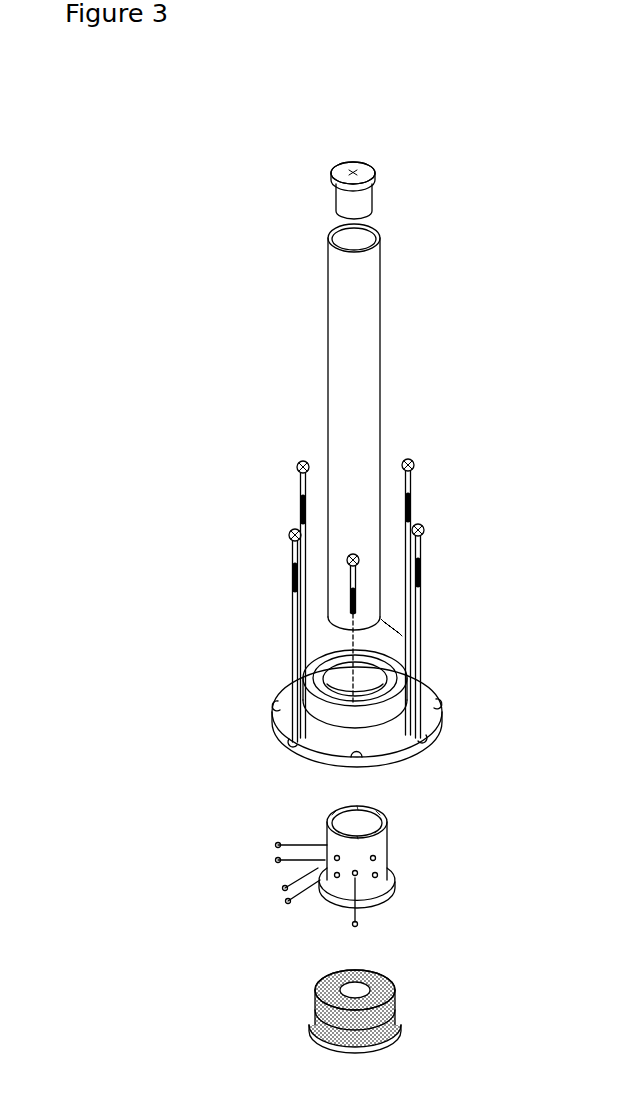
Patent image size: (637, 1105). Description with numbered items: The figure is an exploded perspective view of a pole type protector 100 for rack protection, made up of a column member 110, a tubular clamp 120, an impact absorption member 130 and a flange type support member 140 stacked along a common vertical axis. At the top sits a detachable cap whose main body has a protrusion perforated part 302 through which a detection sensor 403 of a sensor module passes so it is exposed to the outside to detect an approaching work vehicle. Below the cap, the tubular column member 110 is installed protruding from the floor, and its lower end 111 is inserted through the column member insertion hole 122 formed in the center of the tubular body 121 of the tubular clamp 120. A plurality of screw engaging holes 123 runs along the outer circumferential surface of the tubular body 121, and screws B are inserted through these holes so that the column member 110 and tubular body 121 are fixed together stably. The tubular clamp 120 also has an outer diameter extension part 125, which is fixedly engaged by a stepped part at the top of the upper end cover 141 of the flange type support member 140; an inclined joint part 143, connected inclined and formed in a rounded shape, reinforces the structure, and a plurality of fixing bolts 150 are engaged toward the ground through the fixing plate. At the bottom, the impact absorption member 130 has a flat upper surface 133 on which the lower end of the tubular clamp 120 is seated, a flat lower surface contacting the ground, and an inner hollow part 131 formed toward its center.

The pole type protector 100 is at (281, 307).
The protrusion perforated part 302 is at (372, 167).
The detection sensor 403 is at (438, 171).
The column member 110 is at (400, 362).
The lower end 111 is at (380, 618).
The fixing bolts 150 is at (297, 467).
The flange type support member 140 is at (282, 718).
The upper end cover 141 is at (305, 695).
The inclined joint part 143 is at (304, 718).
The tubular clamp 120 is at (408, 852).
The tubular body 121 is at (378, 846).
The column member insertion hole 122 is at (372, 812).
The screw engaging holes 123 is at (390, 860).
The outer diameter extension part 125 is at (393, 887).
The screws B is at (273, 846).
The impact absorption member 130 is at (377, 995).
The inner hollow part 131 is at (343, 987).
The upper surface 133 is at (396, 990).